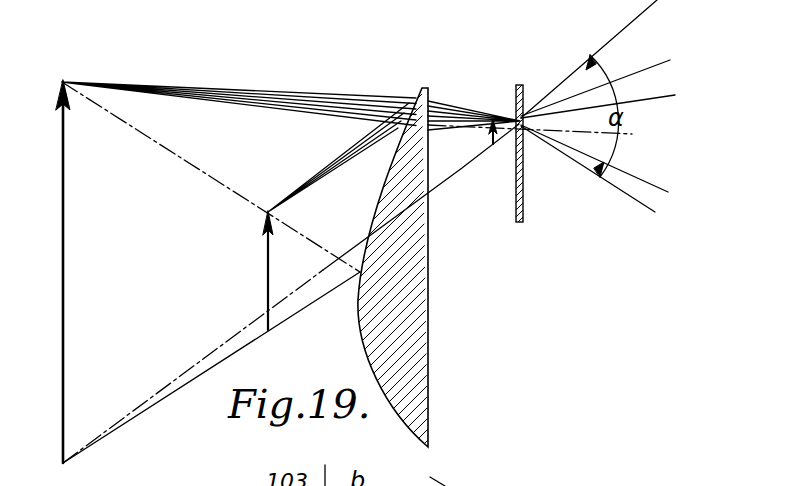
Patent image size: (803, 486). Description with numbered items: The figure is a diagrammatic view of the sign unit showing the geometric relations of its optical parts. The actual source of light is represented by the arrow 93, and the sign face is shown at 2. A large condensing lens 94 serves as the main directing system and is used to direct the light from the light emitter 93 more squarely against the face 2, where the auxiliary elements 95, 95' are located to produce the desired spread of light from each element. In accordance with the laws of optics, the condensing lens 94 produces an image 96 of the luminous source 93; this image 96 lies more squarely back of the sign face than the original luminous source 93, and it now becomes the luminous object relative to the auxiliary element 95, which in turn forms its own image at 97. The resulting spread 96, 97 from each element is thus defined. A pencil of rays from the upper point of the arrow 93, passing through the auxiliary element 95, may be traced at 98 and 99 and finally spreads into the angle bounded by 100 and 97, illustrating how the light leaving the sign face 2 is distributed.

The sign face 2 is at (522, 86).
The light emitter 93 is at (268, 258).
The condensing lens 94 is at (410, 225).
The auxiliary element 95 is at (490, 95).
The auxiliary element 95' is at (556, 199).
The image of the luminous source 96 is at (65, 220).
The image formed by the auxiliary element 97 is at (488, 137).
The pencil of rays 98 is at (320, 170).
The pencil of rays 99 is at (450, 118).
The angle of spread 100 is at (623, 78).